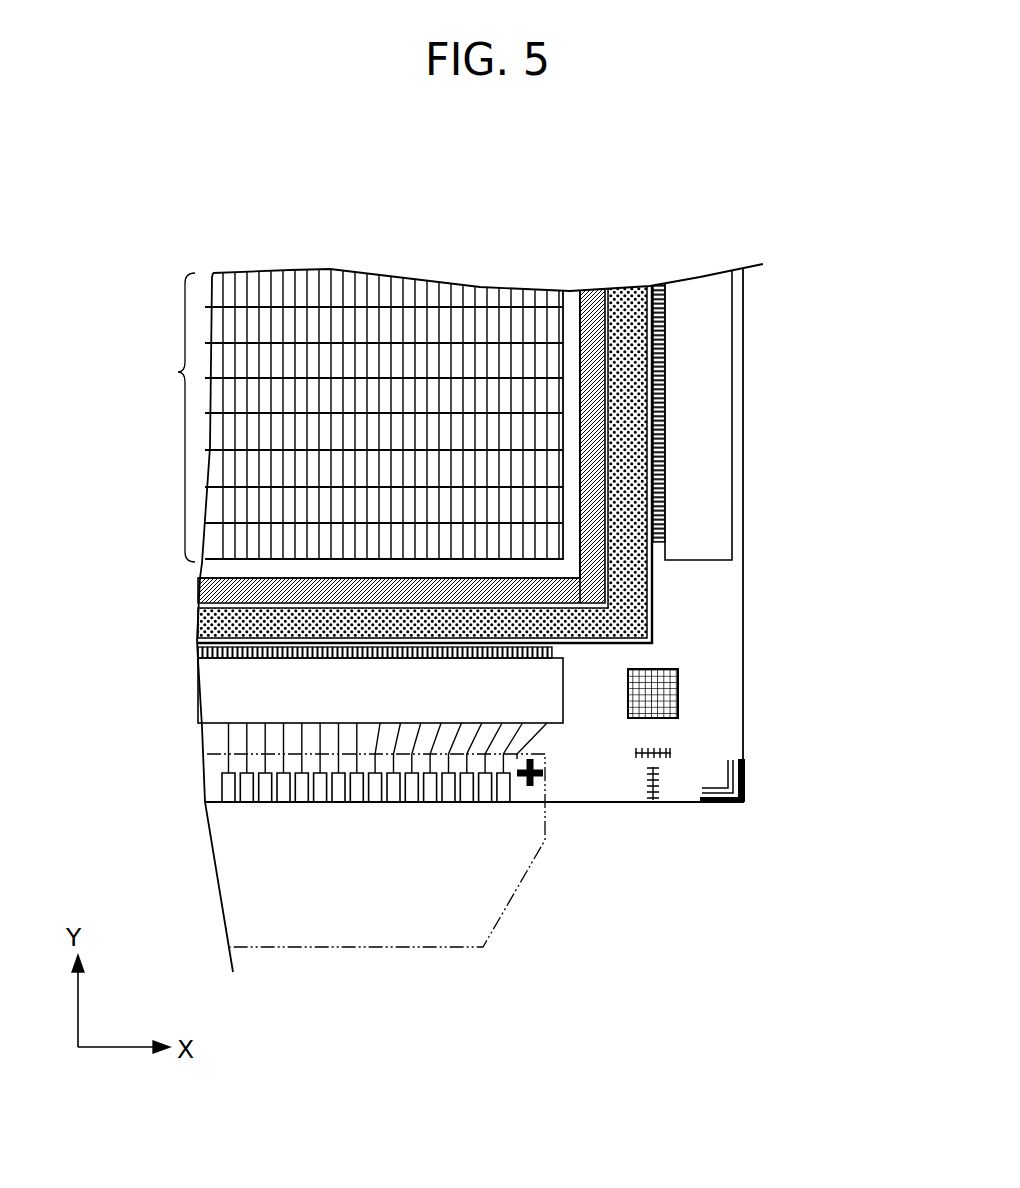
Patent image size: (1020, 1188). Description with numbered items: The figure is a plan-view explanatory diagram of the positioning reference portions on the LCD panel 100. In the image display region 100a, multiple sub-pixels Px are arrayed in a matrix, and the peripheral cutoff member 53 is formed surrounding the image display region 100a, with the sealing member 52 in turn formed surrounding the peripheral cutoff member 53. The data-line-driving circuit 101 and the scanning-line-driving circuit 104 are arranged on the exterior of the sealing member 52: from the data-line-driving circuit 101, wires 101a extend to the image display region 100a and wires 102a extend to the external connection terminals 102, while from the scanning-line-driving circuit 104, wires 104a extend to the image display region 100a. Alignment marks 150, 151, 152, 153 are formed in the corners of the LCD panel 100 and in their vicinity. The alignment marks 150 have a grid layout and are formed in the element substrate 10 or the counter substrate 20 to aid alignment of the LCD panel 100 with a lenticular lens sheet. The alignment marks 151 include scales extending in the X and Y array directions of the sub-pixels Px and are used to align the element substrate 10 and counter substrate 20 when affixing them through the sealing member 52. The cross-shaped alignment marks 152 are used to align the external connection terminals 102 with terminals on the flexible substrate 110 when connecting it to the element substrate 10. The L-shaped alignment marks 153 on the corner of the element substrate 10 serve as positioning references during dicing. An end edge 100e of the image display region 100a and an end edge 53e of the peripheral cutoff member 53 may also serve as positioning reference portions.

The LCD panel 100 is at (481, 579).
The image display region 100a is at (341, 384).
The end edge 100e is at (497, 567).
The element substrate 10 is at (741, 352).
The counter substrate 20 is at (652, 612).
The sealing member 52 is at (630, 292).
The peripheral cutoff member 53 is at (593, 292).
The end edge 53e is at (257, 578).
The sub-pixel Px is at (402, 286).
The data-line-driving circuit 101 is at (212, 688).
The wires 101a is at (200, 651).
The external connection terminals 102 is at (337, 803).
The wires 102a is at (232, 746).
The scanning-line-driving circuit 104 is at (717, 452).
The wires 104a is at (655, 290).
The flexible substrate 110 is at (492, 900).
The alignment marks 150 is at (690, 693).
The alignment marks 151 is at (670, 792).
The alignment marks 152 is at (560, 779).
The alignment marks 153 is at (758, 782).